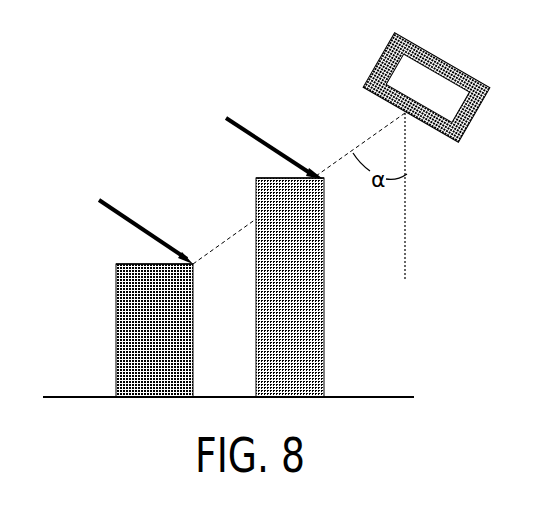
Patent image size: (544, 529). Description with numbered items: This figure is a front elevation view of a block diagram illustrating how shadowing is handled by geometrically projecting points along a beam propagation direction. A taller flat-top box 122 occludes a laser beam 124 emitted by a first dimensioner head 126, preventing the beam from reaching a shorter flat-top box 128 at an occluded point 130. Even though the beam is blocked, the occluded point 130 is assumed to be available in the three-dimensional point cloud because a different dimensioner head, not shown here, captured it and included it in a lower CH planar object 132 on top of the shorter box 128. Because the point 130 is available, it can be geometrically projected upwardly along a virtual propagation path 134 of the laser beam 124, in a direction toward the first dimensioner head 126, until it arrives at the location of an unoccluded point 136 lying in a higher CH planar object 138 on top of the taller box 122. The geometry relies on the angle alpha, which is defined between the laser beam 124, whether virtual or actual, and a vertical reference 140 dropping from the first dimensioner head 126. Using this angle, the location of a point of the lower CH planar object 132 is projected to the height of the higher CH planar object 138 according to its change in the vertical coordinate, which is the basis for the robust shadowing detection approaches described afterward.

The box 122 is at (326, 266).
The laser beam 124 is at (368, 137).
The first dimensioner head 126 is at (457, 73).
The shorter flat-top box 128 is at (116, 288).
The occluded point 130 is at (125, 214).
The lower CH planar object 132 is at (134, 262).
The virtual propagation path 134 is at (250, 221).
The unoccluded point 136 is at (242, 130).
The higher CH planar object 138 is at (263, 177).
The vertical reference 140 is at (410, 203).